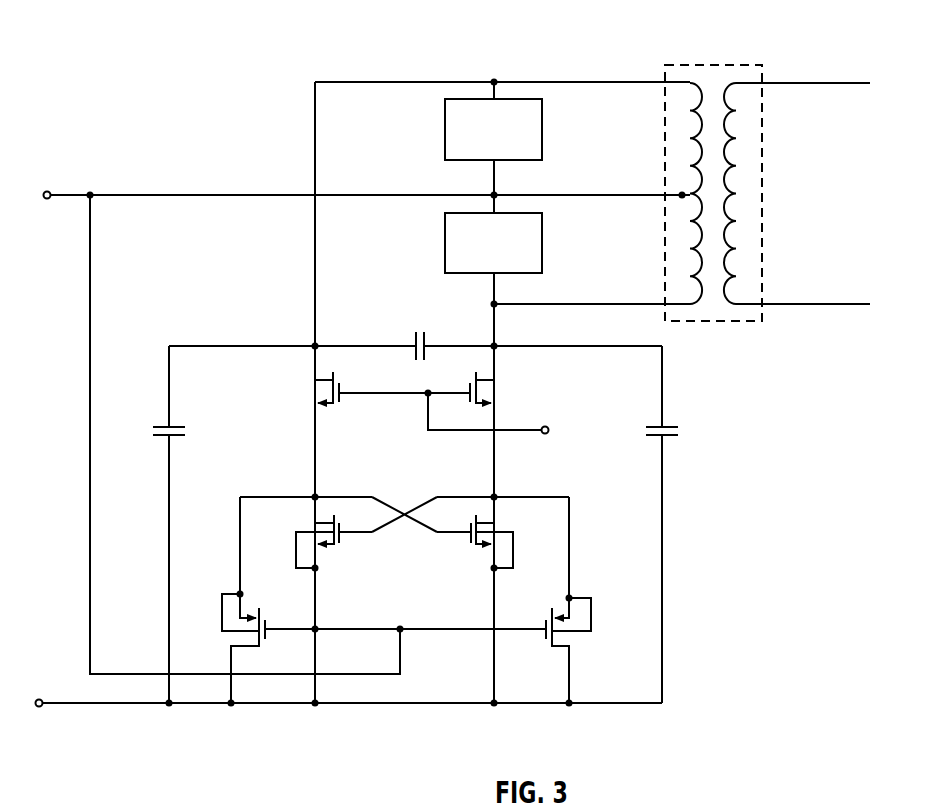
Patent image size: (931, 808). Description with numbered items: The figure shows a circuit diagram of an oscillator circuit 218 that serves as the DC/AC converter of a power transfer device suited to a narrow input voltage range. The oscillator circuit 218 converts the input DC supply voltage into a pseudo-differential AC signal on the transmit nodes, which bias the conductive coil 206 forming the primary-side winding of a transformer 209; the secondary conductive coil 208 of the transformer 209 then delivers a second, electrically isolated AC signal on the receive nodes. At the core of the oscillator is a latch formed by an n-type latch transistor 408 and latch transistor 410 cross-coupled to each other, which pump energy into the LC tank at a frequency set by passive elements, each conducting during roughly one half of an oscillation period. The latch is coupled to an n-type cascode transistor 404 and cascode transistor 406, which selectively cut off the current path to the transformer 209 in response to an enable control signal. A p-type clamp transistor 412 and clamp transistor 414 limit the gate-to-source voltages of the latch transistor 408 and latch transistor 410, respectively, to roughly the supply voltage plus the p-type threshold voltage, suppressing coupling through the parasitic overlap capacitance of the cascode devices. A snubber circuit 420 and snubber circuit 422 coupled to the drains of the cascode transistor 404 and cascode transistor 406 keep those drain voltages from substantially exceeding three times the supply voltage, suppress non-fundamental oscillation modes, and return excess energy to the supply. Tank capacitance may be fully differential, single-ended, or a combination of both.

The oscillator circuit 218 is at (181, 85).
The conductive coil 206 is at (690, 83).
The conductive coil 208 is at (745, 82).
The transformer 209 is at (713, 65).
The cascode transistor 404 is at (331, 403).
The cascode transistor 406 is at (482, 402).
The latch transistor 408 is at (332, 545).
The latch transistor 410 is at (479, 545).
The clamp transistor 412 is at (243, 615).
The clamp transistor 414 is at (563, 617).
The snubber circuit 420 is at (509, 158).
The snubber circuit 422 is at (509, 271).